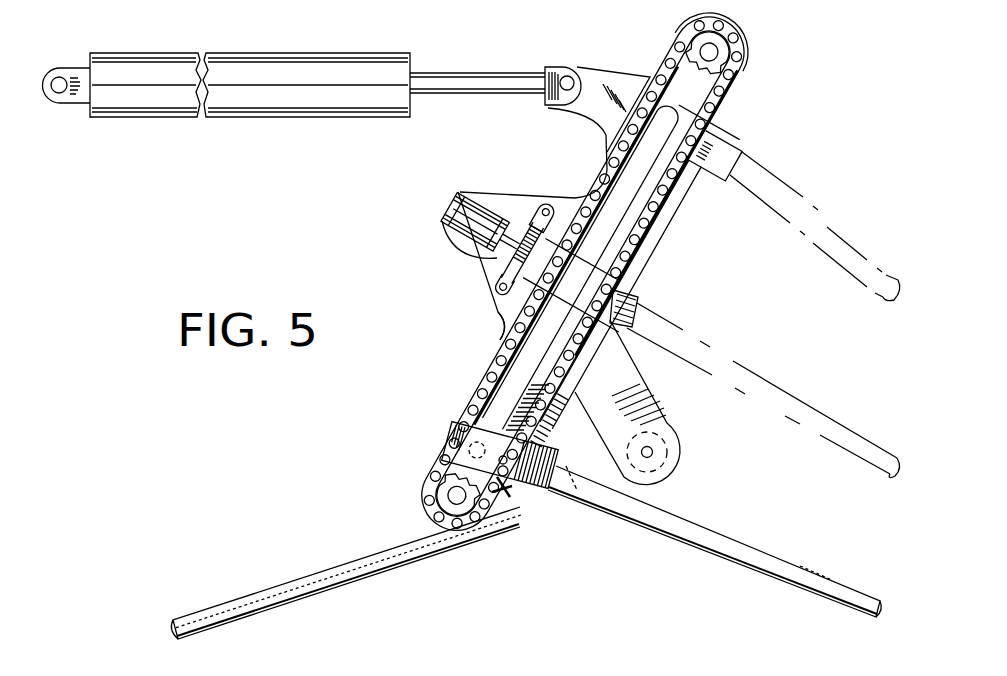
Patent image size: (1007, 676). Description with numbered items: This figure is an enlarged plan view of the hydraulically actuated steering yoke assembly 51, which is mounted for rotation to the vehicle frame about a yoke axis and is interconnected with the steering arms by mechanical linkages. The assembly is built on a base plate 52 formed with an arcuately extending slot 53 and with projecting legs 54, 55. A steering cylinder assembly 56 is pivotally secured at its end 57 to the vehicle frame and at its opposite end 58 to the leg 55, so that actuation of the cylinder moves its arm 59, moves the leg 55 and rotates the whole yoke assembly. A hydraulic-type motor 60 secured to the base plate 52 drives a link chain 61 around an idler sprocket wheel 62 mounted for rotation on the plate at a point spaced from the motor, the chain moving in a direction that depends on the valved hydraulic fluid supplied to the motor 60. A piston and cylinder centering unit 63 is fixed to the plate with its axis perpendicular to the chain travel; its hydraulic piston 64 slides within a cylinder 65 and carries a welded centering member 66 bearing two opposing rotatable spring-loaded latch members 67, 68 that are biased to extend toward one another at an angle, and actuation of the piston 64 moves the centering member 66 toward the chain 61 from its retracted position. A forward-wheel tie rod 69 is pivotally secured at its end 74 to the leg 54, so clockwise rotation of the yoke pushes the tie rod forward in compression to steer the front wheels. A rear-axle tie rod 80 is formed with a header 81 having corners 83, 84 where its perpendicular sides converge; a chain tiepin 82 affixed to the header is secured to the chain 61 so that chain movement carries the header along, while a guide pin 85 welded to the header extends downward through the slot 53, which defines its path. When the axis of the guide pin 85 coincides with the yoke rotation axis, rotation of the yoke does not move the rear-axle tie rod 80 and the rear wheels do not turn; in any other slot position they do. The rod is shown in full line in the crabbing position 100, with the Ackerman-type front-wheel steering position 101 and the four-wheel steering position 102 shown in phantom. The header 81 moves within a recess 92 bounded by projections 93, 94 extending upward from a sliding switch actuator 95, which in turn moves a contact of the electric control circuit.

The steering yoke assembly 51 is at (640, 290).
The base plate 52 is at (487, 200).
The arcuately extending slot 53 is at (535, 372).
The projecting leg 54 is at (650, 398).
The projecting leg 55 is at (604, 72).
The steering cylinder assembly 56 is at (333, 108).
The end 57 is at (62, 92).
The opposite end 58 is at (569, 66).
The arm 59 is at (472, 82).
The hydraulic-type motor 60 is at (747, 42).
The link chain 61 is at (727, 96).
The idler sprocket wheel 62 is at (435, 500).
The piston and cylinder centering unit 63 is at (450, 227).
The hydraulic piston 64 is at (510, 241).
The cylinder 65 is at (475, 222).
The centering member 66 is at (507, 268).
The latch member 67 is at (512, 297).
The latch member 68 is at (540, 210).
The forward-wheel tie rod 69 is at (294, 578).
The end 74 is at (657, 452).
The rear-axle tie rod 80 is at (702, 528).
The header 81 is at (536, 465).
The chain tiepin 82 is at (508, 460).
The corner 83 is at (492, 440).
The corner 84 is at (443, 452).
The guide pin 85 is at (467, 450).
The recess 92 is at (673, 205).
The projection 93 is at (705, 140).
The projection 94 is at (510, 500).
The sliding switch actuator 95 is at (652, 264).
The crabbing mode position 100 is at (802, 564).
The Ackerman-type front-wheel steering position 101 is at (788, 393).
The four-wheel steering position 102 is at (815, 220).